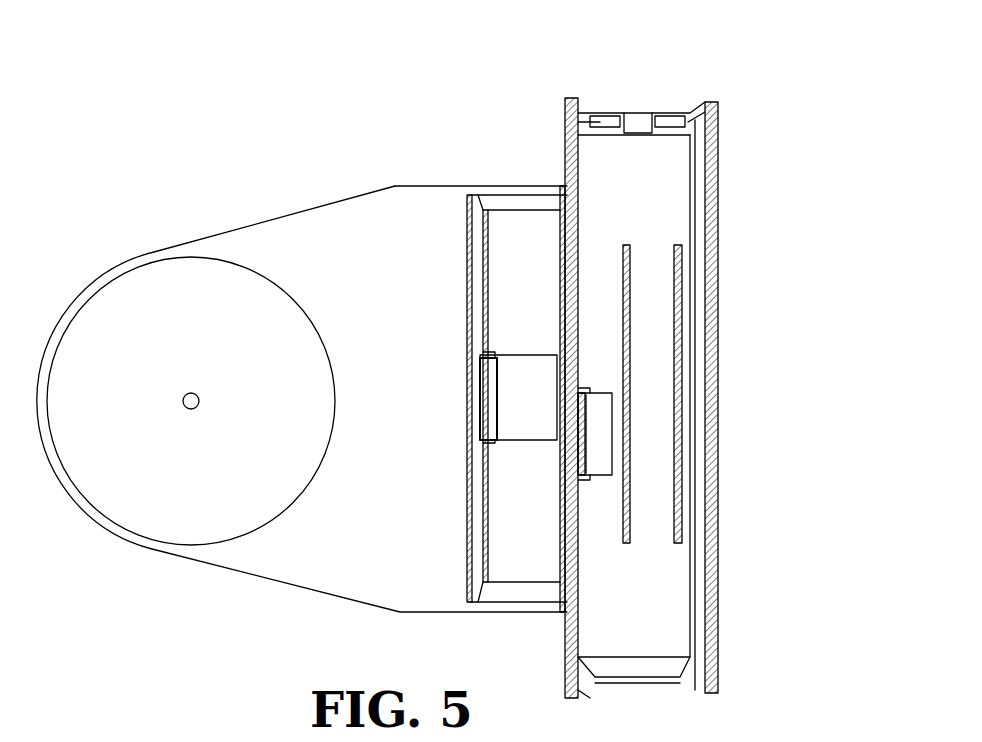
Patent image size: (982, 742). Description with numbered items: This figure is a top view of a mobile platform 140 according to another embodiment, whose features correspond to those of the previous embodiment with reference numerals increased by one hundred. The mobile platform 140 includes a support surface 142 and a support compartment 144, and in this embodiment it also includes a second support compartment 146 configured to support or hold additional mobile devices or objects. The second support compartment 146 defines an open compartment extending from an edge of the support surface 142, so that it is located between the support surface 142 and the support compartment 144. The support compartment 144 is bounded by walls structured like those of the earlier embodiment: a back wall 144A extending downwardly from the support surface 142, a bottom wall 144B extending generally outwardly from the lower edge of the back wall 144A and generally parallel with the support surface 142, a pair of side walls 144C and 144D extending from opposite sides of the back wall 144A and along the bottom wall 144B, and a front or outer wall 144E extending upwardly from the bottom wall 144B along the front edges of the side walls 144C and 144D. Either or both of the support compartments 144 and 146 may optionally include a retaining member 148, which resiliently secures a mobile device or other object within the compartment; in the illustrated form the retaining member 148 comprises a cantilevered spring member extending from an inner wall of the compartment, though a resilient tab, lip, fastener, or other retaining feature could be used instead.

The mobile platform 140 is at (741, 50).
The support surface 142 is at (330, 232).
The support compartment 144 is at (644, 397).
The back wall 144A is at (567, 134).
The bottom wall 144B is at (666, 574).
The side wall 144C is at (645, 679).
The side wall 144D is at (640, 118).
The front wall 144E is at (718, 390).
The second support compartment 146 is at (524, 226).
The retaining member 148 is at (514, 418).